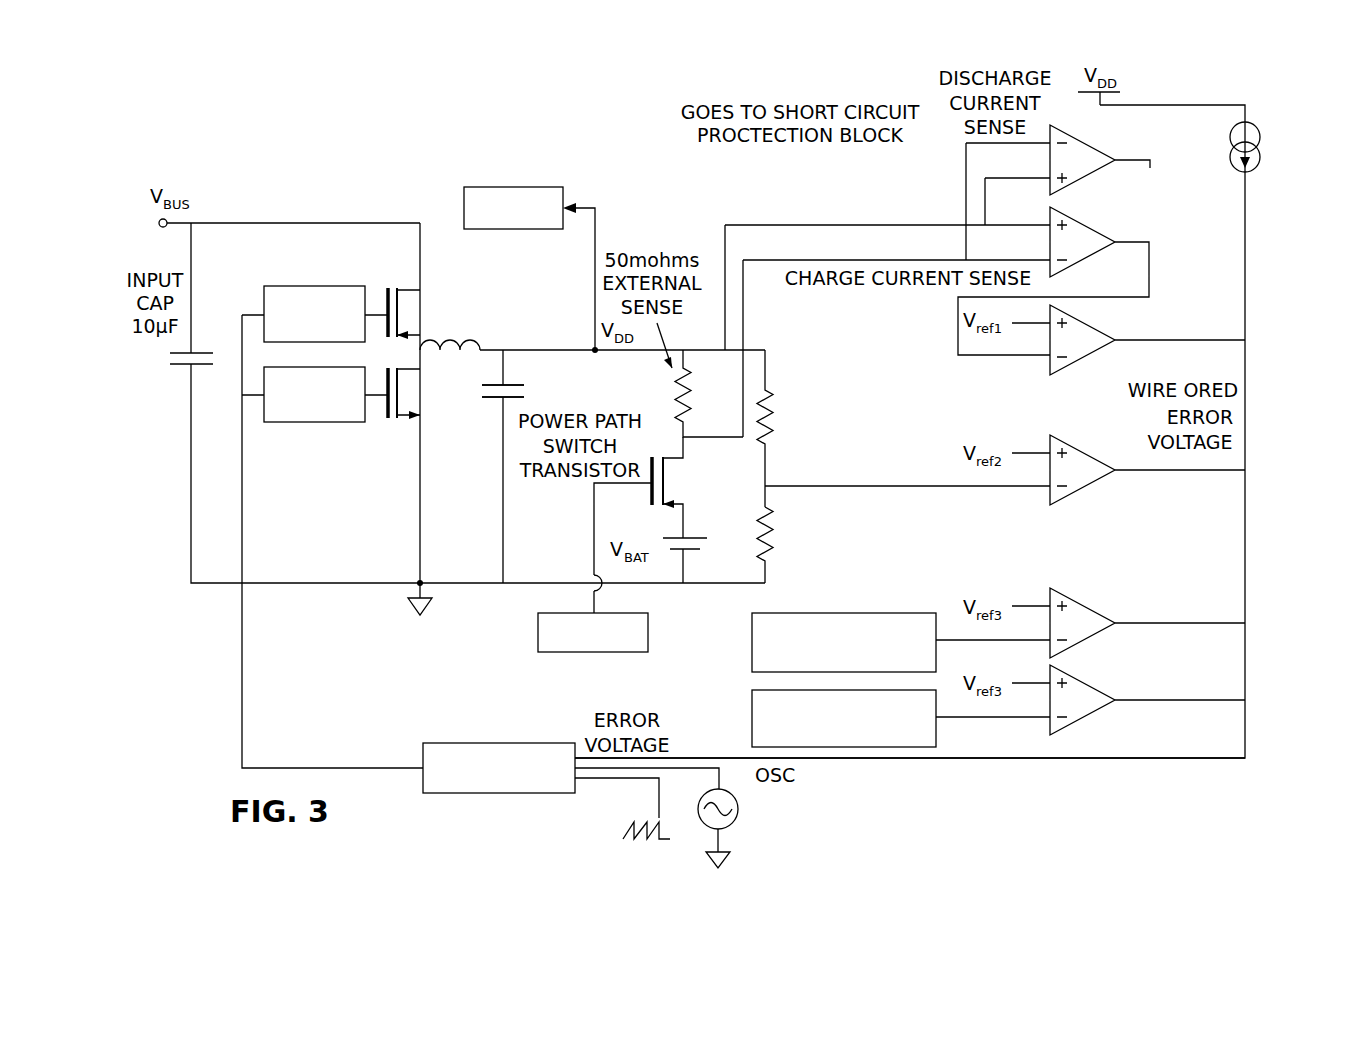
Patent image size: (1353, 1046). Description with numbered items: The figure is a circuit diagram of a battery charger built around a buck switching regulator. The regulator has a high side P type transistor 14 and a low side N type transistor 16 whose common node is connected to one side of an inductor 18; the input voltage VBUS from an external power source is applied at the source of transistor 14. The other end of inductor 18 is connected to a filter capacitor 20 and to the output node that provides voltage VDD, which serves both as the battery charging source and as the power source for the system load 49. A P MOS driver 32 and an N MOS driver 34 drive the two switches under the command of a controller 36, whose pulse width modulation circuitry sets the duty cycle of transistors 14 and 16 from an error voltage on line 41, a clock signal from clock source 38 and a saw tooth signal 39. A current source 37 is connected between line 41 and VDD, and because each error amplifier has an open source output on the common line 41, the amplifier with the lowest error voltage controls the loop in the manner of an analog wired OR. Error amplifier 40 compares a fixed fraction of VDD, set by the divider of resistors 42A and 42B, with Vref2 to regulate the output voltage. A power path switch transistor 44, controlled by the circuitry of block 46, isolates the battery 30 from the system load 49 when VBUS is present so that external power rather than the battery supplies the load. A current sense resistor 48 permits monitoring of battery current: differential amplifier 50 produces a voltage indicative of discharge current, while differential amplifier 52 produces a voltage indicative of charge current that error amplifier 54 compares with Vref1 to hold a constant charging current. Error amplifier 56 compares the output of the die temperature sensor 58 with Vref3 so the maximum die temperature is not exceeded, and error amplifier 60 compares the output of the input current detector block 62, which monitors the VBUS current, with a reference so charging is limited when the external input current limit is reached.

The high side P type transistor 14 is at (407, 291).
The low side N type transistor 16 is at (408, 420).
The inductor 18 is at (456, 342).
The filter capacitor 20 is at (494, 405).
The battery 30 is at (690, 536).
The P MOS driver 32 is at (300, 286).
The N MOS driver 34 is at (318, 422).
The controller 36 is at (468, 743).
The current source 37 is at (1230, 160).
The clock source 38 is at (738, 811).
The saw tooth signal 39 is at (636, 840).
The error amplifier 40 is at (1092, 459).
The line 41 is at (1134, 760).
The resistor 42A is at (775, 420).
The resistor 42B is at (775, 535).
The power path switch transistor 44 is at (674, 457).
The control block 46 is at (538, 630).
The current sense resistor 48 is at (675, 387).
The system load 49 is at (495, 187).
The differential amplifier 50 is at (1092, 149).
The differential amplifier 52 is at (1092, 232).
The error amplifier 54 is at (1092, 356).
The error amplifier 56 is at (1092, 612).
The die temperature sensor 58 is at (752, 648).
The error amplifier 60 is at (1092, 689).
The input current detector block 62 is at (752, 725).